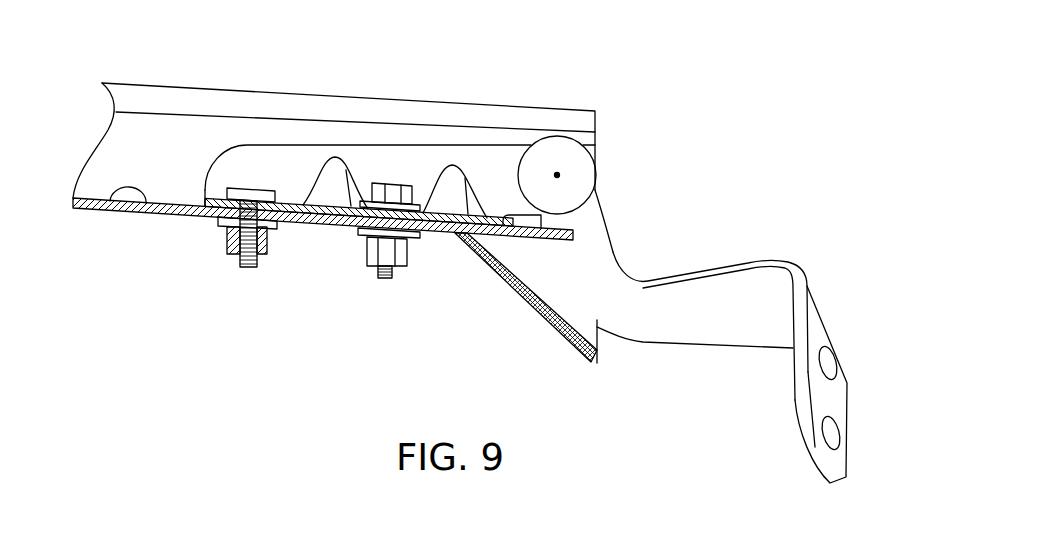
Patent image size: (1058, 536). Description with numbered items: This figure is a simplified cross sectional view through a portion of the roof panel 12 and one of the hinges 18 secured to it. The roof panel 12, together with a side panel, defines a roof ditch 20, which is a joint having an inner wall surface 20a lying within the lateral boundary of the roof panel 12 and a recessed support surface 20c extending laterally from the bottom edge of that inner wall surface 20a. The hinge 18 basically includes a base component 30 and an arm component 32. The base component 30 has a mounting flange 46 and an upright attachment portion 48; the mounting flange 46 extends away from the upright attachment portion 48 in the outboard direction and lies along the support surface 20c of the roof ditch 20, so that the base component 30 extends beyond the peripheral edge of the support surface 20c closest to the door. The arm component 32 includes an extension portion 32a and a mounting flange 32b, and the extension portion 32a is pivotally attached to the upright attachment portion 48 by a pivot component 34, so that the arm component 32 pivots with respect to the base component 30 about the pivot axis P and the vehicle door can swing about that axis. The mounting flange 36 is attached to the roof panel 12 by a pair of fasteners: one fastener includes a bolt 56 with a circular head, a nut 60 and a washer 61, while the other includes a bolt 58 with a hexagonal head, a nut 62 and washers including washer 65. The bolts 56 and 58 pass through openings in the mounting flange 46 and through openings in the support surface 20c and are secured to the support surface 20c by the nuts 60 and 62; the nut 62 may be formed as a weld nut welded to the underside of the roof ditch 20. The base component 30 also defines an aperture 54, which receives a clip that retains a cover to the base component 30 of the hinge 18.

The roof panel 12 is at (290, 94).
The hinge 18 is at (637, 198).
The roof ditch 20 is at (160, 144).
The inner wall surface 20a is at (133, 153).
The recessed support surface 20c is at (122, 203).
The base component 30 is at (397, 166).
The arm component 32 is at (748, 264).
The extension portion 32a is at (708, 322).
The mounting flange 32b is at (828, 405).
The pivot component 34 is at (568, 155).
The mounting flange 36 is at (831, 364).
The mounting flange 46 is at (218, 196).
The upright attachment portion 48 is at (252, 163).
The aperture 54 is at (530, 230).
The bolt 56 is at (244, 268).
The bolt 58 is at (381, 281).
The nut 60 is at (222, 240).
The washer 61 is at (277, 230).
The nut 62 is at (410, 259).
The washer 65 is at (353, 233).
The pivot axis P is at (556, 172).